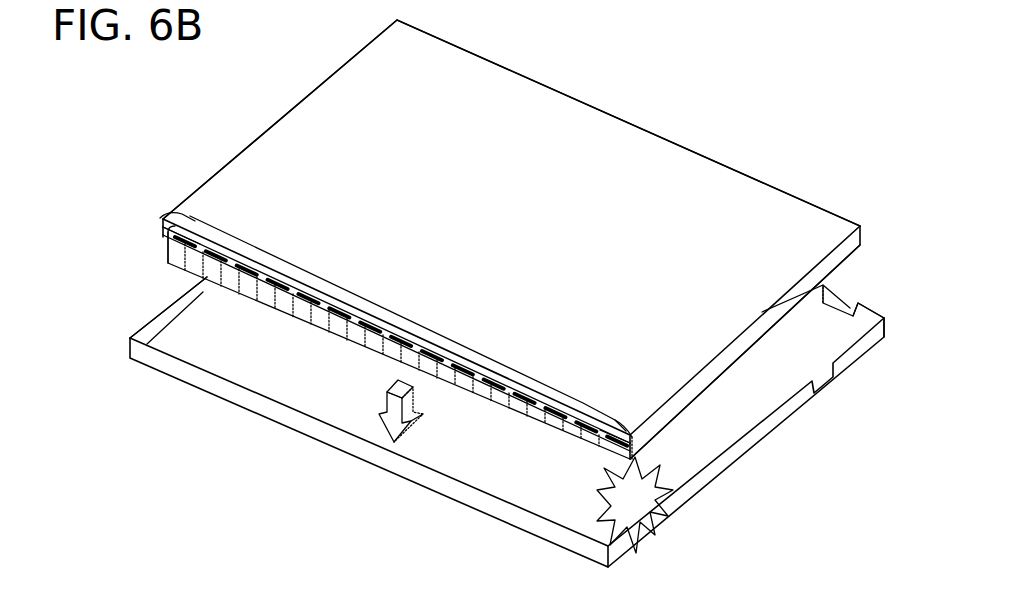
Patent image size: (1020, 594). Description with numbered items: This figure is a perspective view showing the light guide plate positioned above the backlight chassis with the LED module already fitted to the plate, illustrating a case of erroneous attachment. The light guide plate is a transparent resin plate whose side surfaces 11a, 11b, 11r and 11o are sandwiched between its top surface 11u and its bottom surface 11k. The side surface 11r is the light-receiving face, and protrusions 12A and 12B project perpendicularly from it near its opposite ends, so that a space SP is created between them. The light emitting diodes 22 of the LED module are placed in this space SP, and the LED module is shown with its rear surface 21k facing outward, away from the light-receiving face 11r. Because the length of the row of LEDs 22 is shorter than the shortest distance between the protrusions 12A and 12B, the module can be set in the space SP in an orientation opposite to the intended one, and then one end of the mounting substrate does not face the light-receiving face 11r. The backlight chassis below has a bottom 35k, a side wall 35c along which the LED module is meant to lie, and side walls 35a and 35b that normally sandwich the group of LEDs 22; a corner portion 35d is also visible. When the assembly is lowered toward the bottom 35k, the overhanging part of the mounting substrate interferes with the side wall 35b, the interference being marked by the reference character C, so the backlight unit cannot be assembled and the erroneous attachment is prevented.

The side surface 11b is at (298, 106).
The side surface 11o is at (562, 92).
The bottom surface 11k is at (506, 208).
The space SP is at (163, 217).
The protrusion 12B is at (157, 230).
The side wall 35a is at (152, 318).
The side surface (light-receiving face) 11r is at (400, 312).
The bottom 35k is at (368, 404).
The side wall 35c is at (343, 443).
The light emitting diode 22 is at (505, 425).
The rear surface 21k is at (592, 436).
The protrusion 12A is at (643, 432).
The corner notch of frame plate 35d is at (884, 318).
The side surface 11a is at (822, 272).
The top surface 11u is at (762, 330).
The side wall 35b is at (765, 432).
The contact C is at (635, 505).